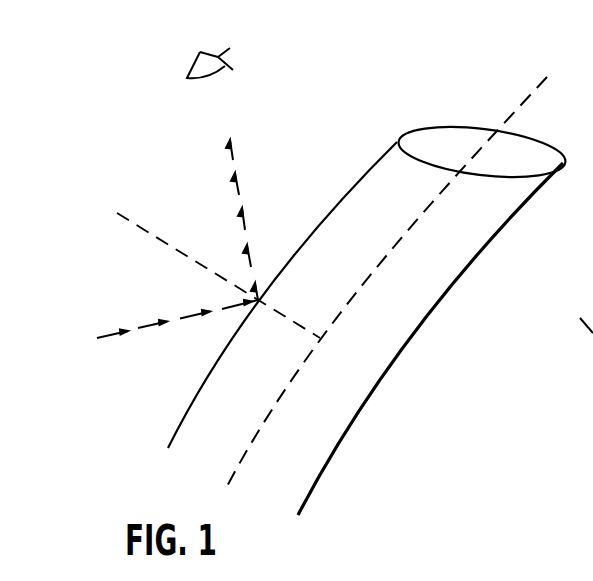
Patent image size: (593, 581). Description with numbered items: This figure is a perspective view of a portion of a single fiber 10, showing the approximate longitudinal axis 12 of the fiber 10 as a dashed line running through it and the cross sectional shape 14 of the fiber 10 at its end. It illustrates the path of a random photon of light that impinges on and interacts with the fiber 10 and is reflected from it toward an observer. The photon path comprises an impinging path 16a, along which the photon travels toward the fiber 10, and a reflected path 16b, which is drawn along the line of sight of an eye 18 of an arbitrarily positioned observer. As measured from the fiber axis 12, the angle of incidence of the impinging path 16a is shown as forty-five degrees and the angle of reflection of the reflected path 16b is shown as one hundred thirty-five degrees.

The fiber 10 is at (328, 415).
The longitudinal axis 12 is at (531, 100).
The cross sectional shape 14 is at (446, 150).
The impinging path 16a is at (120, 372).
The reflected path 16b is at (233, 152).
The eye 18 is at (258, 48).